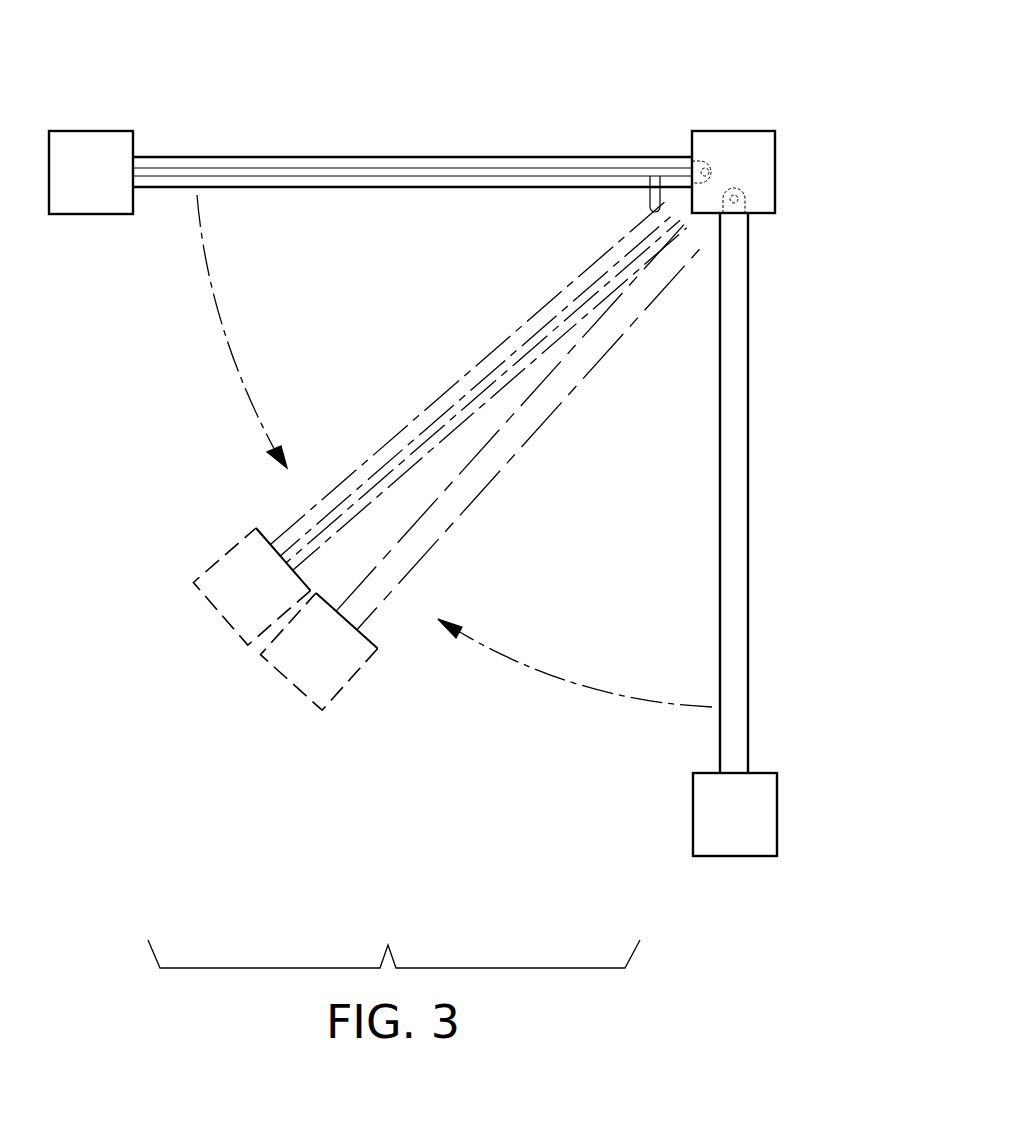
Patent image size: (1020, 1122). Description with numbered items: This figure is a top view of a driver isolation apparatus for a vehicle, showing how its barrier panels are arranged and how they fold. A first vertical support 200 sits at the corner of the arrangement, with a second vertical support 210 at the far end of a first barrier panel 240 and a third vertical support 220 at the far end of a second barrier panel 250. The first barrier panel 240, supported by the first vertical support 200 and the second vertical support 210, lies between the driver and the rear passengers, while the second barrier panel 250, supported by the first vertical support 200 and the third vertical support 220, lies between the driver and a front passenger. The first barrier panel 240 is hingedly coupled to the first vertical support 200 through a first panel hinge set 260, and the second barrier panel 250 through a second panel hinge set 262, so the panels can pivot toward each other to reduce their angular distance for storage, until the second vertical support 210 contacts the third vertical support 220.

The first vertical support 200 is at (750, 148).
The second vertical support 210 is at (725, 849).
The third vertical support 220 is at (83, 152).
The first barrier panel 240 is at (755, 550).
The second barrier panel 250 is at (372, 155).
The first panel hinge set 260 is at (745, 192).
The second panel hinge set 262 is at (703, 162).